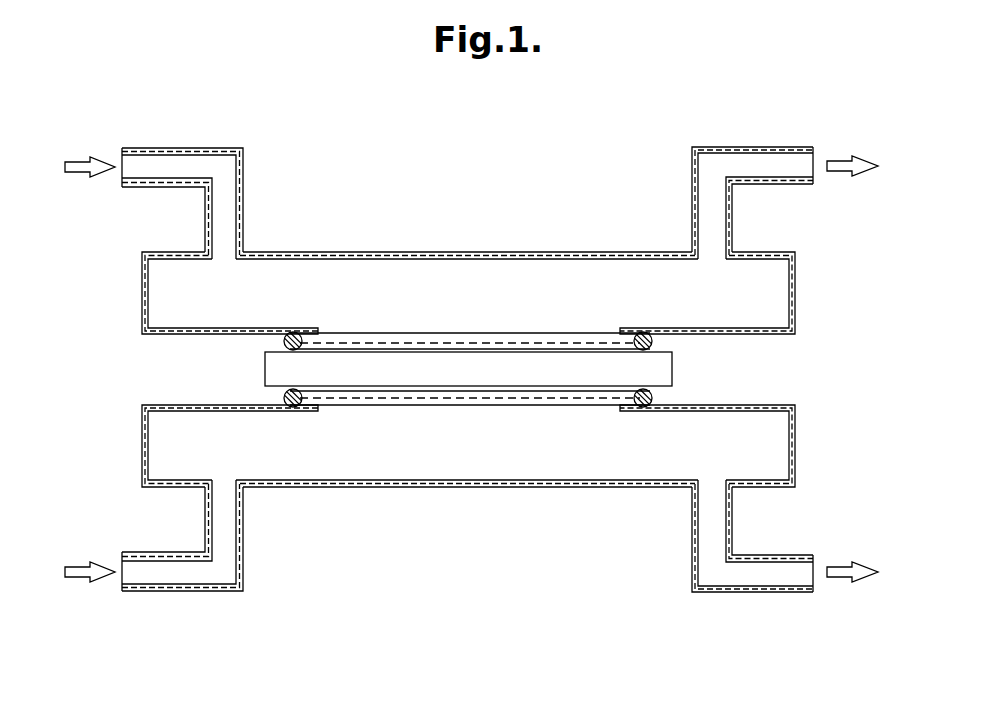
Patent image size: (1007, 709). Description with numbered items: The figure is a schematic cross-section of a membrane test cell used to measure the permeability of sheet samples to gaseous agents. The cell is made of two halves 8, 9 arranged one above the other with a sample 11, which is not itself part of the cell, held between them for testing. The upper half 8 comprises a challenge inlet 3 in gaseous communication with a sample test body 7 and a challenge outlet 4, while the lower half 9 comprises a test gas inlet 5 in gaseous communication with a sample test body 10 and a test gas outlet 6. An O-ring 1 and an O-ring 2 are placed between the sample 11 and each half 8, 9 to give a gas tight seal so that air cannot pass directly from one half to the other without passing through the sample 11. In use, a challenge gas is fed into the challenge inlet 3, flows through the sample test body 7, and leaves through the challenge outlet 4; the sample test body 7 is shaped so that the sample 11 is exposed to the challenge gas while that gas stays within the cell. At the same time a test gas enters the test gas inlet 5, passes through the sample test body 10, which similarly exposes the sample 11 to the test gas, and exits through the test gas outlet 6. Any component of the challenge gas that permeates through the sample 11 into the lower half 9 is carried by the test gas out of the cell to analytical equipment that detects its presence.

The O-ring 1 is at (284, 343).
The O-ring 2 is at (284, 399).
The challenge inlet 3 is at (170, 168).
The challenge outlet 4 is at (750, 165).
The test gas inlet 5 is at (186, 572).
The test gas outlet 6 is at (758, 573).
The sample test body 7 is at (462, 252).
The half 8 is at (522, 218).
The half 9 is at (522, 522).
The sample test body 10 is at (393, 488).
The sample 11 is at (375, 362).